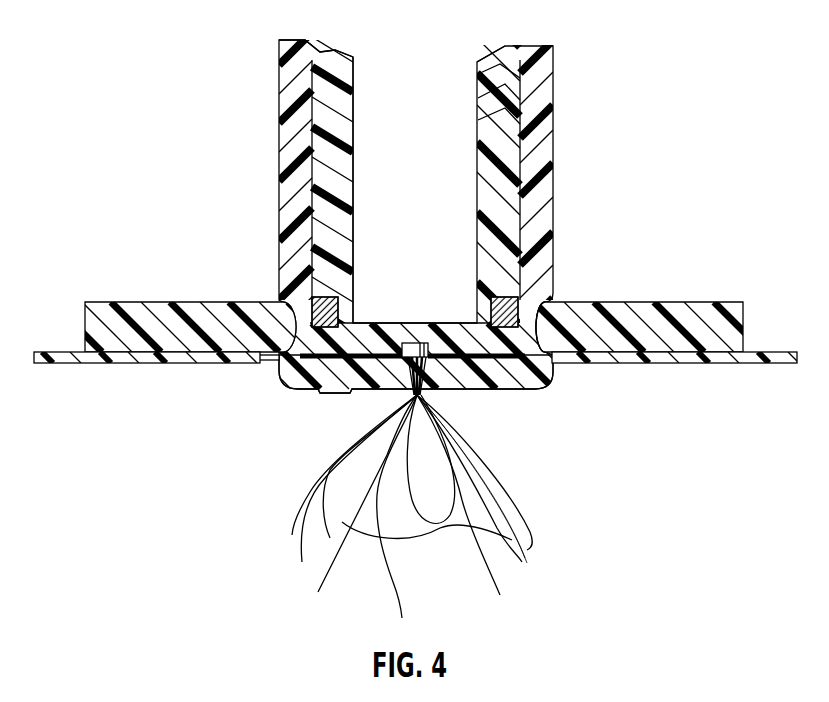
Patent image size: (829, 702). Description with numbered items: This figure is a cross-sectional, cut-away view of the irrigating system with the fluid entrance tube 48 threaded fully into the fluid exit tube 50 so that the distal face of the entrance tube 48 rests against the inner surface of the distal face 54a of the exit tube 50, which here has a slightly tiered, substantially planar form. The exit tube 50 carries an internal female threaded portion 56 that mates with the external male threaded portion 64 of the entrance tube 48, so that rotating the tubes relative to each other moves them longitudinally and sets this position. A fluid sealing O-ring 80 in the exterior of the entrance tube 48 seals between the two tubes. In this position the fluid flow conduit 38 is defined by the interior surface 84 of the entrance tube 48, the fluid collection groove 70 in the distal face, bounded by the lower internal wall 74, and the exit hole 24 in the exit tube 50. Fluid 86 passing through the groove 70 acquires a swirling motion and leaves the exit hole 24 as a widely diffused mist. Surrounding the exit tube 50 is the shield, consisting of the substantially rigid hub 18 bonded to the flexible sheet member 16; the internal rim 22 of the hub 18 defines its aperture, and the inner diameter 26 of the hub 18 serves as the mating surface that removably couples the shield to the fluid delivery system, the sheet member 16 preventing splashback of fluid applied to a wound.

The flexible sheet member 16 is at (728, 364).
The hub 18 is at (697, 307).
The internal rim 22 is at (276, 361).
The exit hole 24 is at (417, 395).
The inner diameter 26 is at (595, 304).
The fluid flow conduit 38 is at (413, 140).
The fluid entrance tube 48 is at (335, 44).
The fluid exit tube 50 is at (274, 60).
The distal face 54a is at (329, 397).
The internal female threaded portion 56 is at (510, 89).
The external male threaded portion 64 is at (515, 123).
The fluid collection groove 70 is at (409, 340).
The lower internal wall 74 is at (421, 345).
The fluid sealing O-ring 80 is at (503, 300).
The interior surface 84 is at (353, 149).
The fluid 86 is at (549, 522).